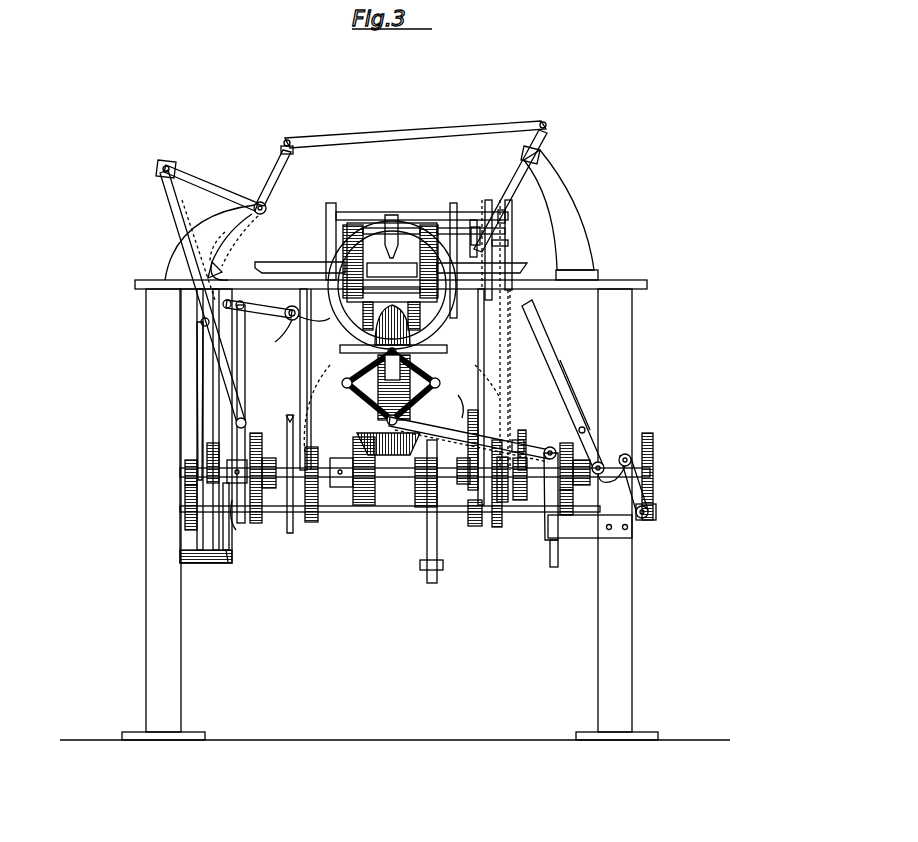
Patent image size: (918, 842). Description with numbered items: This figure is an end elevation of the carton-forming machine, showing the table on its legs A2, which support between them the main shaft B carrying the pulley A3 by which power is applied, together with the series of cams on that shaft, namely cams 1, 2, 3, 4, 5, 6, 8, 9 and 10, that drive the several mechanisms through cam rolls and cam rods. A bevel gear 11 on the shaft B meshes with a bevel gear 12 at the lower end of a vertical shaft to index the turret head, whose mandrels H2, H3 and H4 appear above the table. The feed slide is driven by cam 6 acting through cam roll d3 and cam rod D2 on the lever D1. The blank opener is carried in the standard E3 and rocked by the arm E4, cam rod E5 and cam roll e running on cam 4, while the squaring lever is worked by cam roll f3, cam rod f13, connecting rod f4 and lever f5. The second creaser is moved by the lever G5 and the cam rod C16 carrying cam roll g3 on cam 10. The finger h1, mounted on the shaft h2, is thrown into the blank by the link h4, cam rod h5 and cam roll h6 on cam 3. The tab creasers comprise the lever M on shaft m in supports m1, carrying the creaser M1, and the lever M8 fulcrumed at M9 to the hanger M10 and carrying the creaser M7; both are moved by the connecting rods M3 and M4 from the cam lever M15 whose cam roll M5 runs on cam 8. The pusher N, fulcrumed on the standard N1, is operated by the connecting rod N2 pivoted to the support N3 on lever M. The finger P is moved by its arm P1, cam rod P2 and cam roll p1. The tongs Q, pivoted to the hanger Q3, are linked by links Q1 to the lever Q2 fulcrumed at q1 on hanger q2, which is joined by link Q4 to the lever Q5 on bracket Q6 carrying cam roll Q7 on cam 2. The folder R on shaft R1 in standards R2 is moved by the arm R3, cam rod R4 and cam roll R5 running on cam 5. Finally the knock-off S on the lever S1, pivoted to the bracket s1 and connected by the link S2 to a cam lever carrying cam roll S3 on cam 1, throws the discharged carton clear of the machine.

The leg A2 is at (391, 506).
The connecting rod N2 is at (457, 131).
The support N3 is at (282, 177).
The shaft m is at (259, 202).
The lever M is at (198, 189).
The connecting rod M3 is at (176, 216).
The creaser M1 is at (265, 233).
The support m1 is at (230, 226).
The pusher N is at (520, 152).
The standard N1 is at (566, 200).
The standard E3 is at (331, 204).
The shaft h2 is at (430, 213).
The folder R is at (402, 227).
The standard R2 is at (348, 242).
The finger h1 is at (388, 246).
The mandrel H3 is at (405, 264).
The mandrel H2 is at (308, 255).
The mandrel H4 is at (521, 267).
The shaft R1 is at (455, 210).
The arm R3 is at (476, 227).
The arm E4 is at (490, 205).
The link h4 is at (511, 212).
The cam rod E5 is at (506, 222).
The cam rod h5 is at (498, 258).
The creaser M7 is at (346, 308).
The finger P is at (380, 305).
The hanger Q3 is at (392, 325).
The lever M8 is at (340, 348).
The tongs Q is at (392, 381).
The link Q1 is at (370, 370).
The lever Q2 is at (461, 397).
The bevel gear 12 is at (363, 434).
The lever D1 is at (435, 390).
The cam roll d3 is at (450, 415).
The lever G5 is at (240, 304).
The hanger M10 is at (292, 306).
The lever f5 is at (282, 318).
The fulcrum M9 is at (298, 333).
The connecting rod M4 is at (246, 392).
The connecting rod f4 is at (220, 416).
The cam rod C16 is at (235, 388).
The arm P1 is at (272, 355).
The cam rod P2 is at (300, 360).
The cam roll p1 is at (317, 410).
The cam rod R4 is at (480, 320).
The hanger q2 is at (511, 345).
The cam roll e is at (481, 375).
The fulcrum q1 is at (517, 412).
The cam roll h6 is at (521, 420).
The knock-off S is at (545, 331).
The lever S1 is at (566, 386).
The bracket s1 is at (598, 425).
The link S2 is at (652, 482).
The cam roll S3 is at (646, 522).
The main shaft B is at (396, 482).
The bevel gear 11 is at (360, 508).
The cam 10 is at (190, 459).
The cam roll g3 is at (185, 515).
The cam 9 is at (212, 450).
The cam 8 is at (256, 433).
The pulley A3 is at (291, 491).
The cam 4 is at (312, 466).
The cam roll f3 is at (238, 527).
The cam roll M5 is at (232, 548).
The cam rod f13 is at (208, 565).
The cam lever M15 is at (228, 560).
The cam 6 is at (418, 495).
The cam rod D2 is at (430, 535).
The cam roll R5 is at (475, 527).
The cam 5 is at (472, 410).
The cam 3 is at (525, 491).
The link Q4 is at (550, 480).
The lever Q5 is at (554, 567).
The cam 2 is at (563, 455).
The cam roll Q7 is at (573, 505).
The bracket Q6 is at (587, 538).
The cam 1 is at (648, 433).